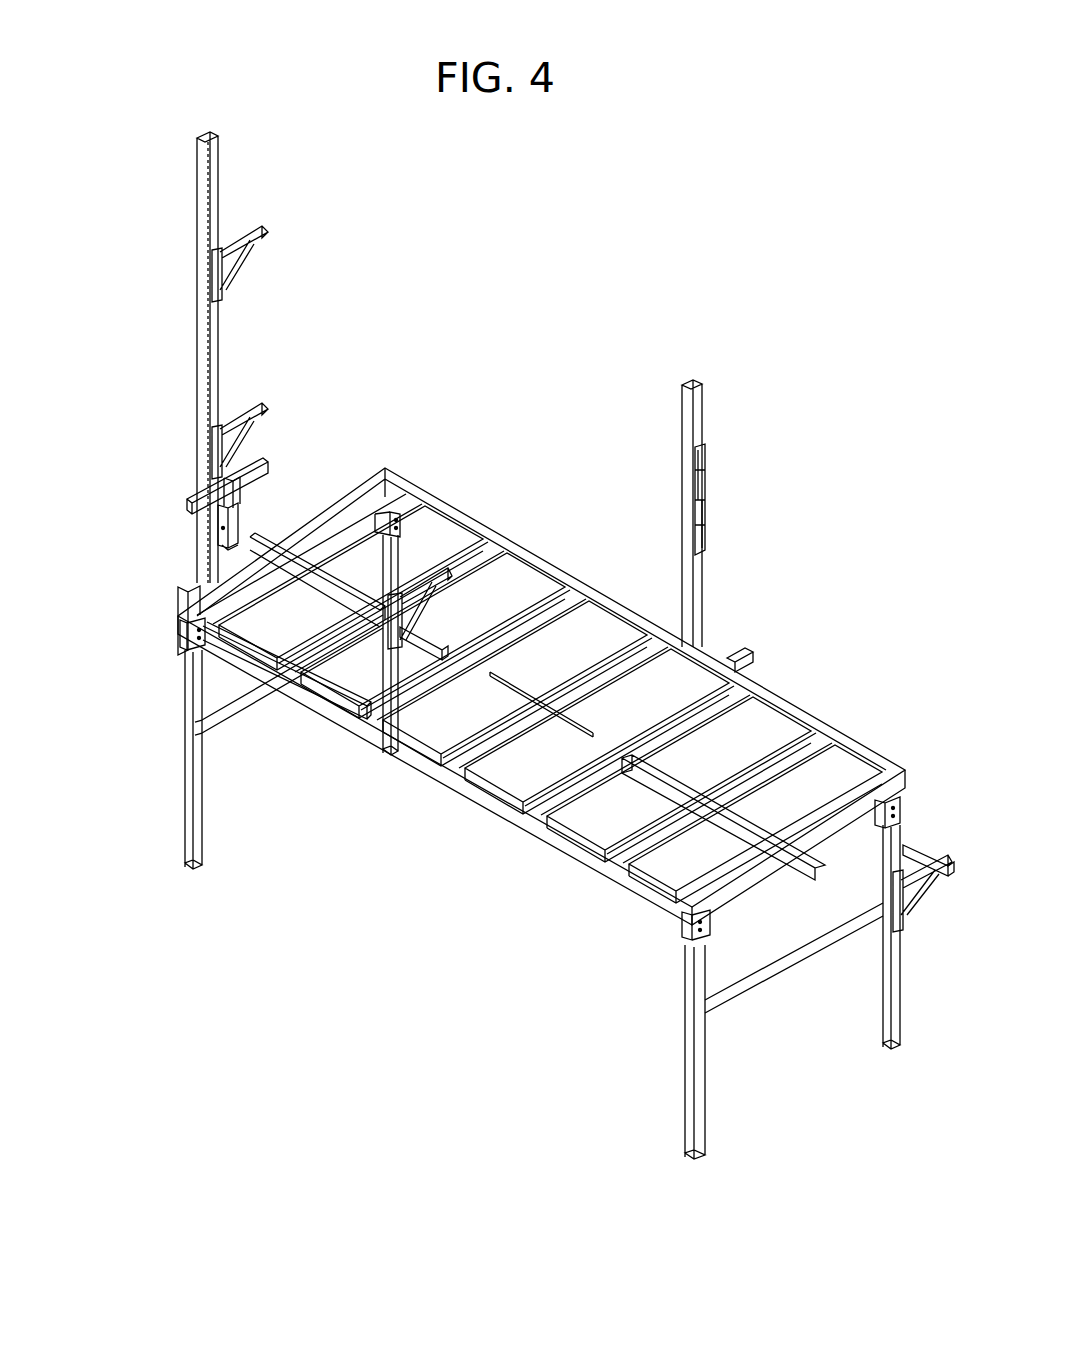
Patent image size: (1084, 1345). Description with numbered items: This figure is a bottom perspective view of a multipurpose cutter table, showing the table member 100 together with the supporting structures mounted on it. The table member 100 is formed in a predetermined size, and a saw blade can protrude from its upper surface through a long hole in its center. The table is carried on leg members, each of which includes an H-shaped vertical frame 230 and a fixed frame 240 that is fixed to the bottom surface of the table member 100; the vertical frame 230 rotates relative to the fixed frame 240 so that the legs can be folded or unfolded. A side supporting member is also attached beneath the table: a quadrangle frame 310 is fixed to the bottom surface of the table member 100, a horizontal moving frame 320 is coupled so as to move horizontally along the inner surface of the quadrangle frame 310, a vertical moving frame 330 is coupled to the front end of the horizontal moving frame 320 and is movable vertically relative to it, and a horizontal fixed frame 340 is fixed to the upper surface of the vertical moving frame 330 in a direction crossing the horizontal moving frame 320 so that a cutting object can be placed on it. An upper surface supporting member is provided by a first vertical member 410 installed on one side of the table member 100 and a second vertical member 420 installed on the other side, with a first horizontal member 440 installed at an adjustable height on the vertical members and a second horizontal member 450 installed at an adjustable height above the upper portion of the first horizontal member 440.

The table member 100 is at (525, 568).
The vertical frame 230 is at (198, 792).
The fixed frame 240 is at (182, 640).
The quadrangle frame 310 is at (315, 597).
The horizontal moving frame 320 is at (220, 518).
The vertical moving frame 330 is at (238, 490).
The horizontal fixed frame 340 is at (262, 458).
The first vertical member 410 is at (198, 345).
The second vertical member 420 is at (703, 600).
The first horizontal member 440 is at (213, 441).
The second horizontal member 450 is at (210, 263).